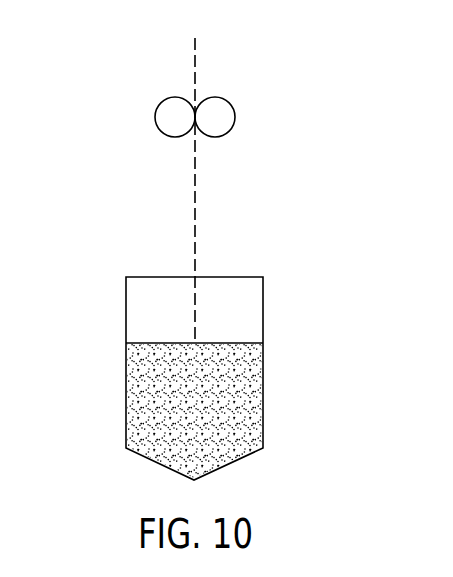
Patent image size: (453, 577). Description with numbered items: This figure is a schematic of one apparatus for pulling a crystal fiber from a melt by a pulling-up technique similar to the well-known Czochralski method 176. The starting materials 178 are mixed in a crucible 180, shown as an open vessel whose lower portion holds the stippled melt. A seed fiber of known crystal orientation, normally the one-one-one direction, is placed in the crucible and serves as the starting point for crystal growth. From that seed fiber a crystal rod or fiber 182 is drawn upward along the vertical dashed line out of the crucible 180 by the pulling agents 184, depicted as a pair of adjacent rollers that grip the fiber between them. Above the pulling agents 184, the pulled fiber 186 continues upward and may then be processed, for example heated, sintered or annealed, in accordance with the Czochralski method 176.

The Czochralski method 176 is at (88, 173).
The starting materials 178 is at (148, 392).
The crucible 180 is at (126, 320).
The crystal rod or fiber 182 is at (195, 238).
The pulling agents 184 is at (215, 117).
The pulled fiber 186 is at (193, 67).